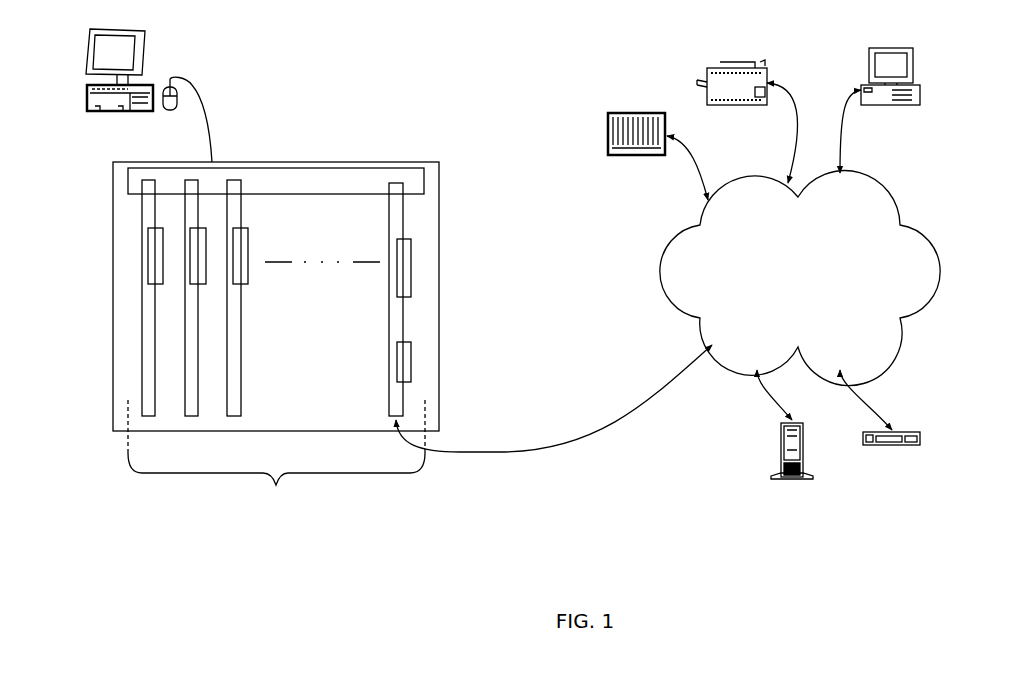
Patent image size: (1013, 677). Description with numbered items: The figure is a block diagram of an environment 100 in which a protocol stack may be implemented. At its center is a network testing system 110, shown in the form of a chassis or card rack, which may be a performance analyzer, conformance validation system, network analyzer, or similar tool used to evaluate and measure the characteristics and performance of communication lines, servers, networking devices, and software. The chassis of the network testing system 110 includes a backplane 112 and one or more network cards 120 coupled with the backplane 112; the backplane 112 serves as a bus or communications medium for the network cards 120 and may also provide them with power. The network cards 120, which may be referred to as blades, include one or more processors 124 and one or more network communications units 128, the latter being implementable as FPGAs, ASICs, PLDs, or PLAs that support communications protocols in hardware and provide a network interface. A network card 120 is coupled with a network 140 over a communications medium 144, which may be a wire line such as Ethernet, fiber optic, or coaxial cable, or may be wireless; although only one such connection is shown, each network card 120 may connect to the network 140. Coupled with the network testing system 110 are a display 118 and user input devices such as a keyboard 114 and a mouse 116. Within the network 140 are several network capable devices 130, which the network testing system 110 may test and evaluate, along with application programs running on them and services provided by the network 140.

The environment 100 is at (522, 62).
The network testing system 110 is at (240, 162).
The backplane 112 is at (276, 180).
The keyboard 114 is at (87, 98).
The mouse 116 is at (169, 112).
The display 118 is at (92, 57).
The network cards 120 is at (276, 358).
The processor 124 is at (411, 267).
The network communications unit 128 is at (411, 362).
The devices 130 is at (764, 287).
The network 140 is at (800, 278).
The communications medium 144 is at (507, 452).